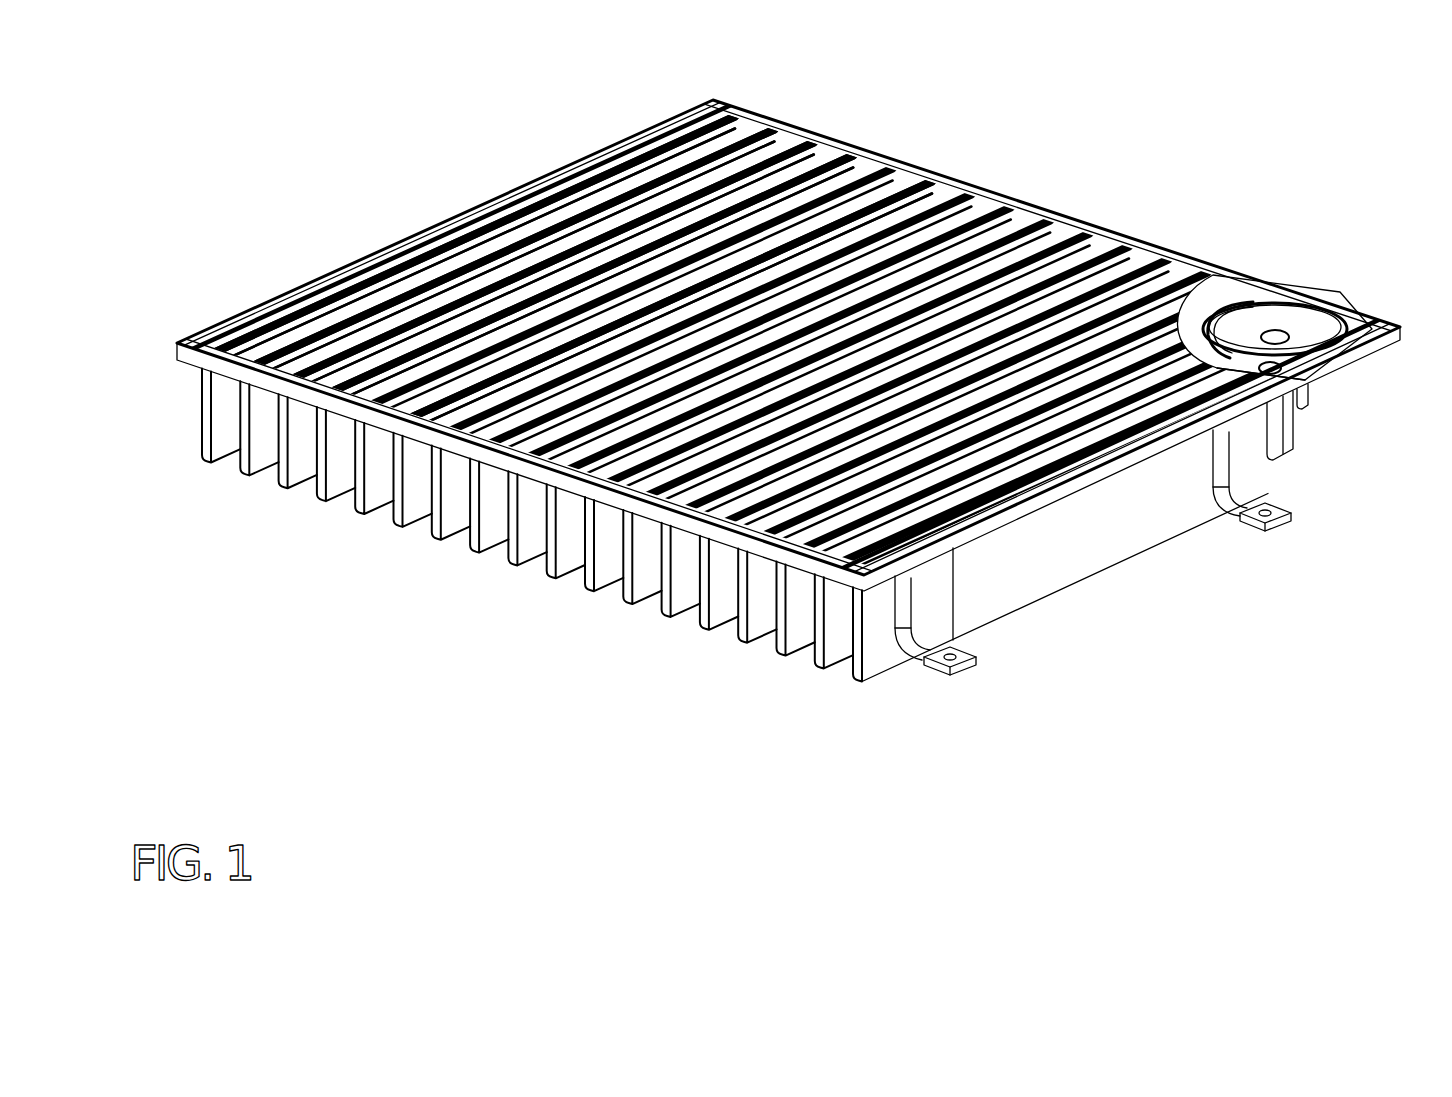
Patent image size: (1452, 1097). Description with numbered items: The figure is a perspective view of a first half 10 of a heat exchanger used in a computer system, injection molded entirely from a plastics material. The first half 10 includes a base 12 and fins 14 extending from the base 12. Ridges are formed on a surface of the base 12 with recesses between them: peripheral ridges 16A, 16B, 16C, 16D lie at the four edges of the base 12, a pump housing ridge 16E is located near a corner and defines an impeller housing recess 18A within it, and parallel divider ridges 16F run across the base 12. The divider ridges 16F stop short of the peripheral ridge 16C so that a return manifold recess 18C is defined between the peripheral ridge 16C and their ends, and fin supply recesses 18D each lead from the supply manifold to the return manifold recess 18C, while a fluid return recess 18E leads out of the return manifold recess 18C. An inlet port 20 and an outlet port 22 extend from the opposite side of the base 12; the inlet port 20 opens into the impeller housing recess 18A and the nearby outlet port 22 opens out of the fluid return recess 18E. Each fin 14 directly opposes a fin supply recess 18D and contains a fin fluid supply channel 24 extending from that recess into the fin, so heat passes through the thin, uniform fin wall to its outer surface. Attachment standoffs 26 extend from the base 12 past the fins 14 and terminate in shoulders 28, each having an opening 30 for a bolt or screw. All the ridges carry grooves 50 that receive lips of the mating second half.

The first half 10 is at (960, 787).
The base 12 is at (230, 325).
The fins 14 is at (602, 583).
The peripheral ridge 16A is at (950, 190).
The peripheral ridge 16B is at (480, 225).
The peripheral ridge 16C is at (360, 395).
The peripheral ridge 16D is at (1168, 445).
The pump housing ridge 16E is at (1212, 320).
The divider ridges 16F is at (757, 134).
The impeller housing recess 18A is at (1305, 328).
The return manifold recess 18C is at (275, 345).
The fin supply recesses 18D is at (569, 215).
The fluid return recess 18E is at (1038, 485).
The inlet port 20 is at (1305, 395).
The outlet port 22 is at (1290, 440).
The fin fluid supply channel 24 is at (455, 265).
The attachment standoffs 26 is at (1012, 652).
The shoulder 28 is at (968, 665).
The opening 30 is at (928, 650).
The grooves 50 is at (1350, 325).